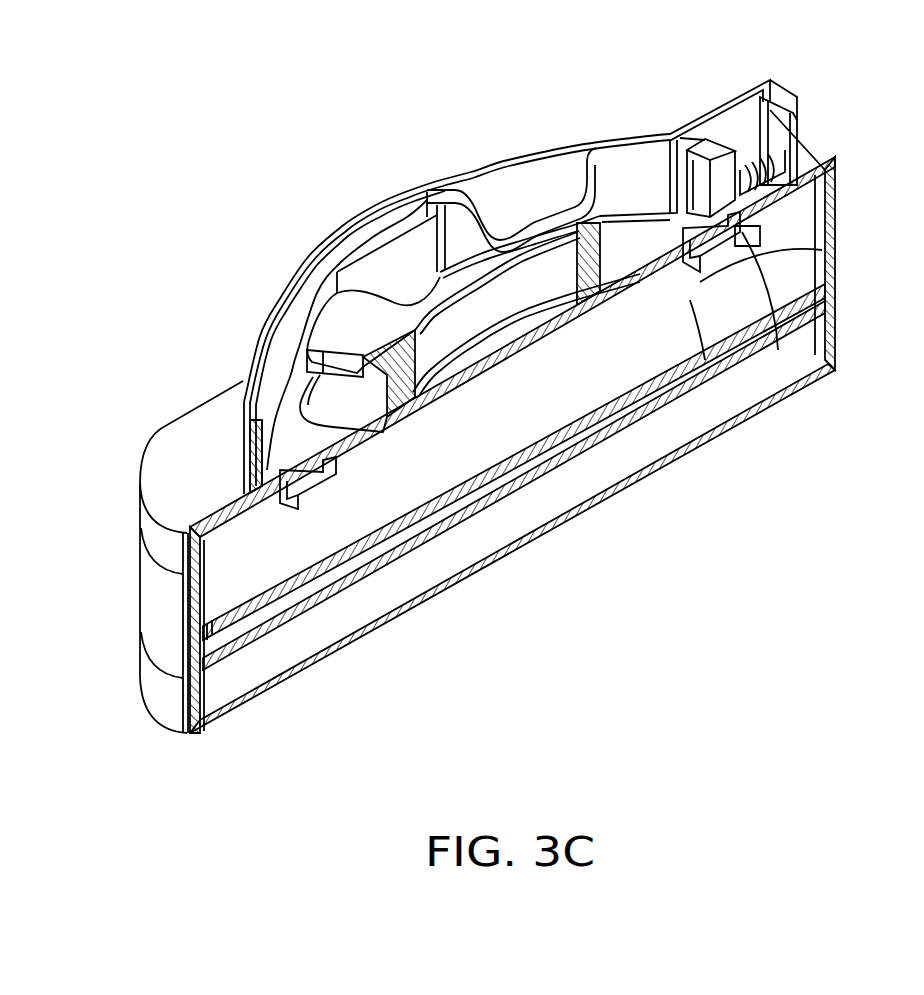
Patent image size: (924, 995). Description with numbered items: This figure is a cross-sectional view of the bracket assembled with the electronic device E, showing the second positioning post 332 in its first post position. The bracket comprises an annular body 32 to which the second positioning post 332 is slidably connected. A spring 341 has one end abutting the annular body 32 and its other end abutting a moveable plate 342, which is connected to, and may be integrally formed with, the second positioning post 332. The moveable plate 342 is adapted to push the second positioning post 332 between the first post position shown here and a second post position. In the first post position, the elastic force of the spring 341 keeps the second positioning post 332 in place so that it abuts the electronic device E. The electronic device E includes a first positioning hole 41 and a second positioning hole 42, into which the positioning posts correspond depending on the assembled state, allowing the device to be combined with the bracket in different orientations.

The electronic device E is at (173, 445).
The annular body 32 is at (624, 172).
The spring 341 is at (748, 172).
The moveable plate 342 is at (800, 138).
The second positioning post 332 is at (750, 246).
The second positioning hole 42 is at (707, 268).
The first positioning hole 41 is at (328, 490).